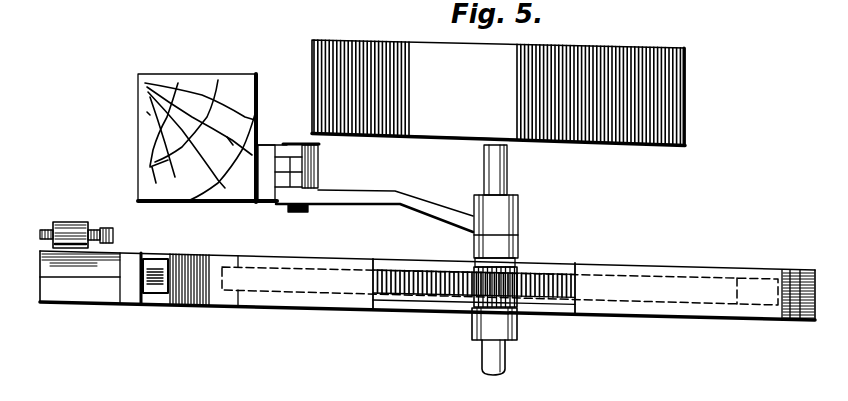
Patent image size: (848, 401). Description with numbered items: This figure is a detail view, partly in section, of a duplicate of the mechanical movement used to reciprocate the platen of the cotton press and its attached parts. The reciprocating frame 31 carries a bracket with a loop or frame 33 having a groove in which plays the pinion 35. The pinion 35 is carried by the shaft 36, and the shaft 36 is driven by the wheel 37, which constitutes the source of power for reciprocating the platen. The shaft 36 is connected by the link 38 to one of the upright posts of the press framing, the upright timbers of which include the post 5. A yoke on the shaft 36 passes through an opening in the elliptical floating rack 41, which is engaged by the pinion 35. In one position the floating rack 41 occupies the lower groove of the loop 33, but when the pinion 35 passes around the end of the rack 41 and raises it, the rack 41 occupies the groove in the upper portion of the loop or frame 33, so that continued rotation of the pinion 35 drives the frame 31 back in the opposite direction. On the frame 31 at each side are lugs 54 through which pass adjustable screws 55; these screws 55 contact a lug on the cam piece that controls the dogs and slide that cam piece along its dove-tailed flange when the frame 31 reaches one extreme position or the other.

The upright timber 5 is at (228, 85).
The reciprocating frame 31 is at (94, 292).
The loop or frame 33 is at (665, 273).
The pinion 35 is at (507, 288).
The shaft 36 is at (509, 182).
The wheel 37 is at (498, 93).
The link 38 is at (421, 199).
The elliptical floating rack 41 is at (415, 292).
The lug 54 is at (78, 223).
The adjustable screw 55 is at (101, 231).